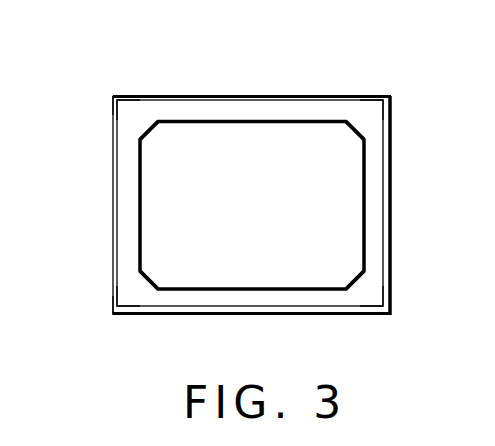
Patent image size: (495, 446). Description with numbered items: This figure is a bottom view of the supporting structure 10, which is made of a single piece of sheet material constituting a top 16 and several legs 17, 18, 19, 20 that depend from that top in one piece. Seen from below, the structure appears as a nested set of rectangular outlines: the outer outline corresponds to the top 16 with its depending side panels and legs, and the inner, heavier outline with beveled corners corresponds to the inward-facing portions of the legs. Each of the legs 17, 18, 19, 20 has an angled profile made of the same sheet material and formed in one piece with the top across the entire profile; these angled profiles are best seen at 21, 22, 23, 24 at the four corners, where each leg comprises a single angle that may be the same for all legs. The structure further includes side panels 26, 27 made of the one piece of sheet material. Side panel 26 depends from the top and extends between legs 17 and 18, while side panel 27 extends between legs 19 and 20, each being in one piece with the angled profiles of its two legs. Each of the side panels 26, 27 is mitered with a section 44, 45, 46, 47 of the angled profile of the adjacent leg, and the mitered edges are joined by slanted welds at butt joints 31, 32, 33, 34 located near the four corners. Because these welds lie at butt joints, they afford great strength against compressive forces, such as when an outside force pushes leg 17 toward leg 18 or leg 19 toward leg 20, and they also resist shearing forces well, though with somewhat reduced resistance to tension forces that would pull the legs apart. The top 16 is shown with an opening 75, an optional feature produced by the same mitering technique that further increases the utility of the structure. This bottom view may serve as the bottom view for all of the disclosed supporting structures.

The supporting structure 10 is at (337, 95).
The top 16 is at (128, 200).
The leg 17 is at (112, 108).
The leg 18 is at (394, 115).
The leg 19 is at (112, 296).
The leg 20 is at (392, 301).
The angled profile 21 is at (118, 103).
The angled profile 22 is at (383, 104).
The angled profile 23 is at (118, 306).
The angled profile 24 is at (383, 305).
The side panel 26 is at (207, 112).
The side panel 27 is at (292, 317).
The butt joint 31 is at (138, 98).
The butt joint 32 is at (362, 100).
The butt joint 33 is at (138, 313).
The butt joint 34 is at (365, 316).
The section of angled profile 44 is at (131, 96).
The section of angled profile 45 is at (386, 99).
The section of angled profile 46 is at (124, 318).
The section of angled profile 47 is at (380, 318).
The opening 75 is at (254, 202).